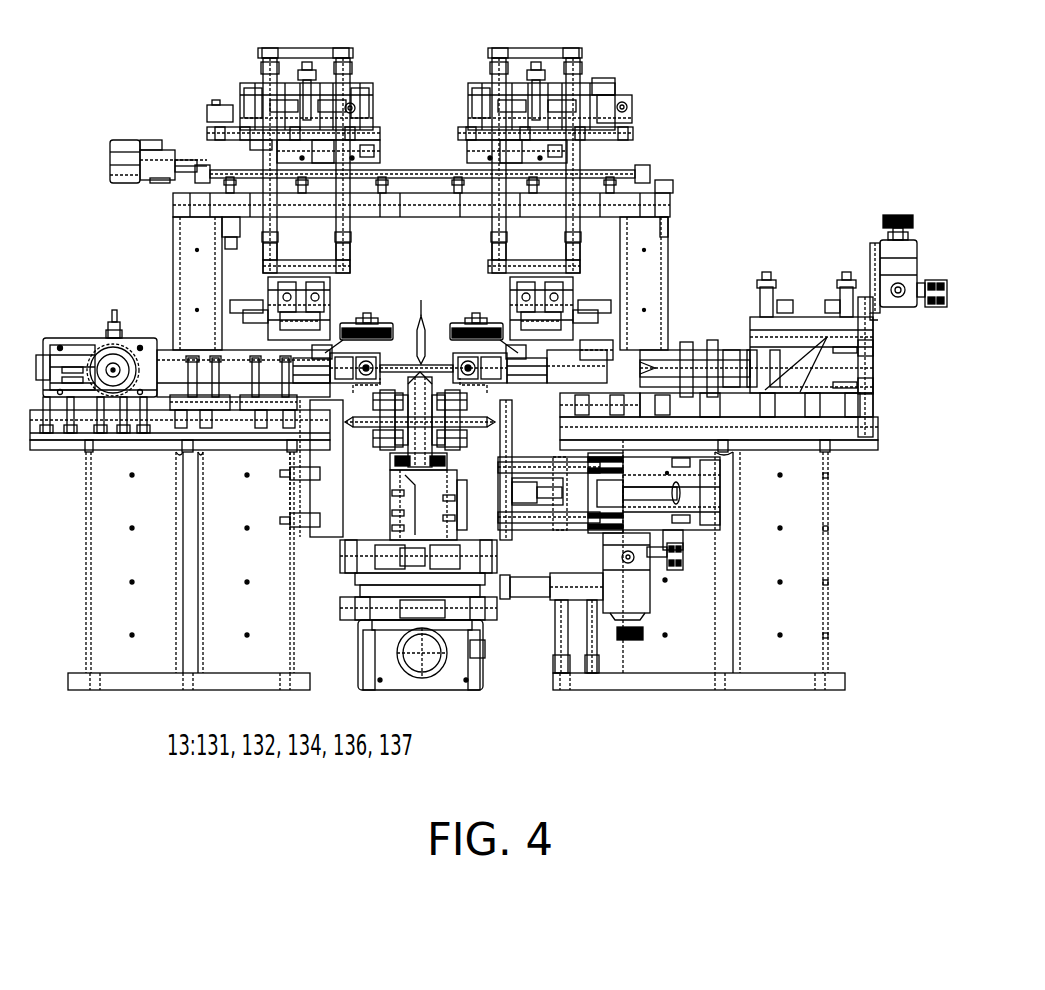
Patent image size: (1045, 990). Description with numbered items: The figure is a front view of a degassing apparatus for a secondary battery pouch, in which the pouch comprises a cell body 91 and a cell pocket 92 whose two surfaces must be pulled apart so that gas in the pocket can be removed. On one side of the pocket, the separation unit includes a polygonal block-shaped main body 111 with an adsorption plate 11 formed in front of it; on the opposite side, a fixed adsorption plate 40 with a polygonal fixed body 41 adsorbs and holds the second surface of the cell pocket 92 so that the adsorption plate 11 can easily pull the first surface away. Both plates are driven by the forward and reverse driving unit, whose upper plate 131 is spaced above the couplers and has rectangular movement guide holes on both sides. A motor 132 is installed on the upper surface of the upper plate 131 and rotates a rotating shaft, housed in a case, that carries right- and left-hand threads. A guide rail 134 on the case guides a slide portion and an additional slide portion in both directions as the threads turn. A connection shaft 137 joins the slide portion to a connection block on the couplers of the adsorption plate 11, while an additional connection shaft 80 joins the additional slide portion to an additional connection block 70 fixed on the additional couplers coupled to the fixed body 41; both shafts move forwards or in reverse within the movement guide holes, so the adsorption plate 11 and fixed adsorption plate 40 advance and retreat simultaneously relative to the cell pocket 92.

The additional connection shaft 80 is at (277, 157).
The guide rail 134 is at (406, 160).
The connection shaft 137 is at (567, 158).
The upper plate 131 is at (670, 200).
The motor 132 is at (122, 183).
The additional connection block 70 is at (263, 268).
The fixed body 41 is at (378, 320).
The cell pocket 92 is at (418, 312).
The fixed adsorption plate 40 is at (391, 325).
The adsorption plate 11 is at (441, 325).
The main body 111 is at (466, 320).
The cell body 91 is at (431, 374).